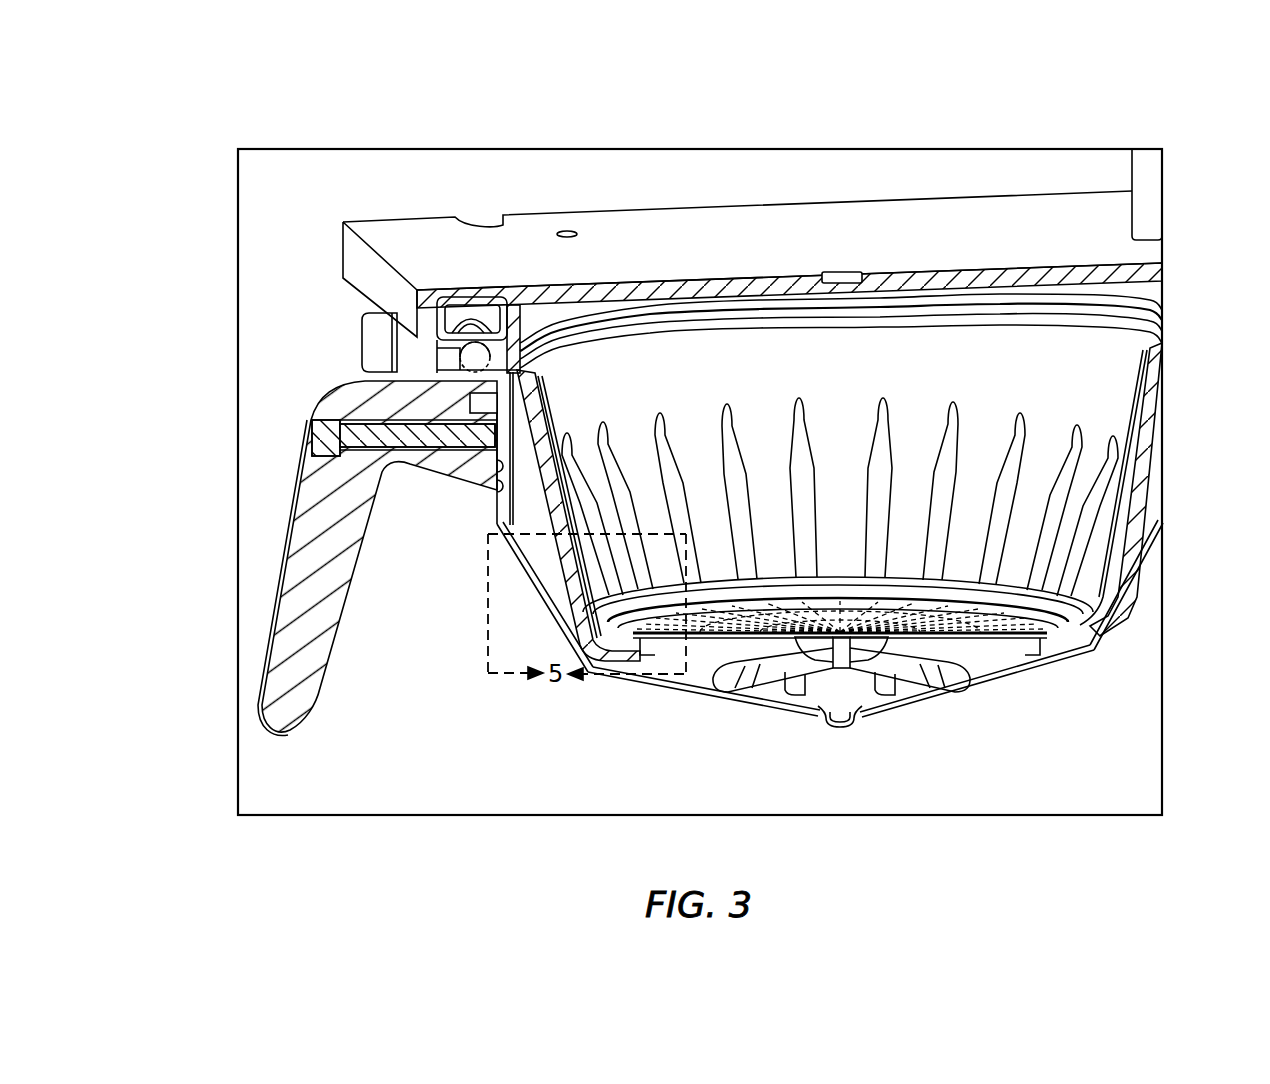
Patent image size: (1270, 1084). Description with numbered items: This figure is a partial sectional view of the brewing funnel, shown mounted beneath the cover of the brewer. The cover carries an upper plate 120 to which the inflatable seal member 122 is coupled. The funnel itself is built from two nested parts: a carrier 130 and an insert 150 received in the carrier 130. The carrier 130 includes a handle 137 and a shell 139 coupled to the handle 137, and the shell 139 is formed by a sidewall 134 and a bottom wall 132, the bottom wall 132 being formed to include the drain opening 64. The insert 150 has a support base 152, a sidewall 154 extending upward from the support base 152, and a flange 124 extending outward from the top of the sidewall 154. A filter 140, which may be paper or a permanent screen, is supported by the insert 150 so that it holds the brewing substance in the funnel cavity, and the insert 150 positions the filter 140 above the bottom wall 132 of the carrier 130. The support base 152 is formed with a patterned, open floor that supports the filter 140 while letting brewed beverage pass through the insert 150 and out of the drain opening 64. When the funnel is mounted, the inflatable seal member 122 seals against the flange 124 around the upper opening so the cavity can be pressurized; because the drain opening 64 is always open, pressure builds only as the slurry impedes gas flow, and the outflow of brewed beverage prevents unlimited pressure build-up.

The upper plate 120 is at (421, 237).
The inflatable seal member 122 is at (435, 312).
The flange 124 is at (440, 350).
The carrier 130 is at (250, 565).
The bottom wall 132 is at (686, 693).
The sidewall 134 is at (528, 578).
The handle 137 is at (293, 506).
The shell 139 is at (468, 514).
The filter 140 is at (1107, 372).
The insert 150 is at (1165, 460).
The support base 152 is at (1020, 666).
The sidewall 154 is at (536, 411).
The drain opening 64 is at (840, 745).